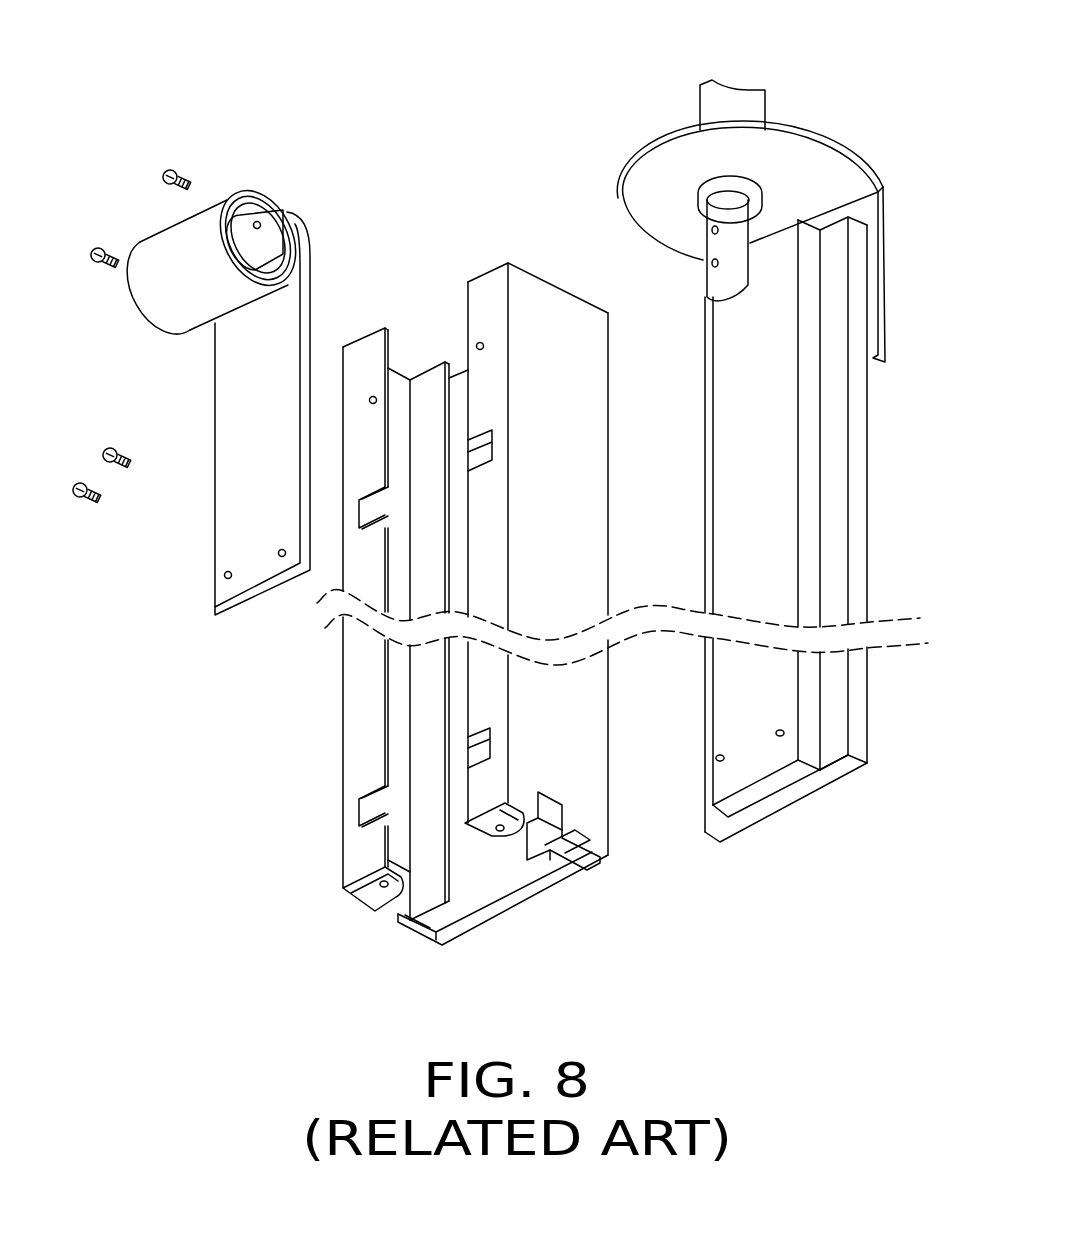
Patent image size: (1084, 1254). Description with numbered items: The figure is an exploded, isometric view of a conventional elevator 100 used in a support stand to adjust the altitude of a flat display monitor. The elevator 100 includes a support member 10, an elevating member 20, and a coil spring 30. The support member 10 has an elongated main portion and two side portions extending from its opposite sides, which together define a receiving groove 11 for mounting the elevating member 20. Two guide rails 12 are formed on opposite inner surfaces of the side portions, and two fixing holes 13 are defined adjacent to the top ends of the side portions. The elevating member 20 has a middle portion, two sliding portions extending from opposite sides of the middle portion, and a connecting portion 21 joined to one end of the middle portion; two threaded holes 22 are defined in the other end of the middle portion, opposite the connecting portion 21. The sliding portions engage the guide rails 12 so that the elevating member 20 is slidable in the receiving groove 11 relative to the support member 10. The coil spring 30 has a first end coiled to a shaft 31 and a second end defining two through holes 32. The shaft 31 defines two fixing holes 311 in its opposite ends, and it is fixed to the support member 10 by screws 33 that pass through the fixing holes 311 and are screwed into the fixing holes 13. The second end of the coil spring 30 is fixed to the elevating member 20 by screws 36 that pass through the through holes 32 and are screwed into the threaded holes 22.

The elevator 100 is at (513, 78).
The support member 10 is at (362, 760).
The receiving groove 11 is at (400, 733).
The guide rails 12 is at (413, 555).
The fixing holes 13 is at (373, 396).
The elevating member 20 is at (835, 422).
The connecting portion 21 is at (797, 167).
The threaded holes 22 is at (780, 737).
The coil spring 30 is at (175, 287).
The shaft 31 is at (279, 221).
The fixing holes 311 is at (257, 221).
The through holes 32 is at (279, 553).
The screws 33 is at (97, 246).
The screws 36 is at (76, 486).